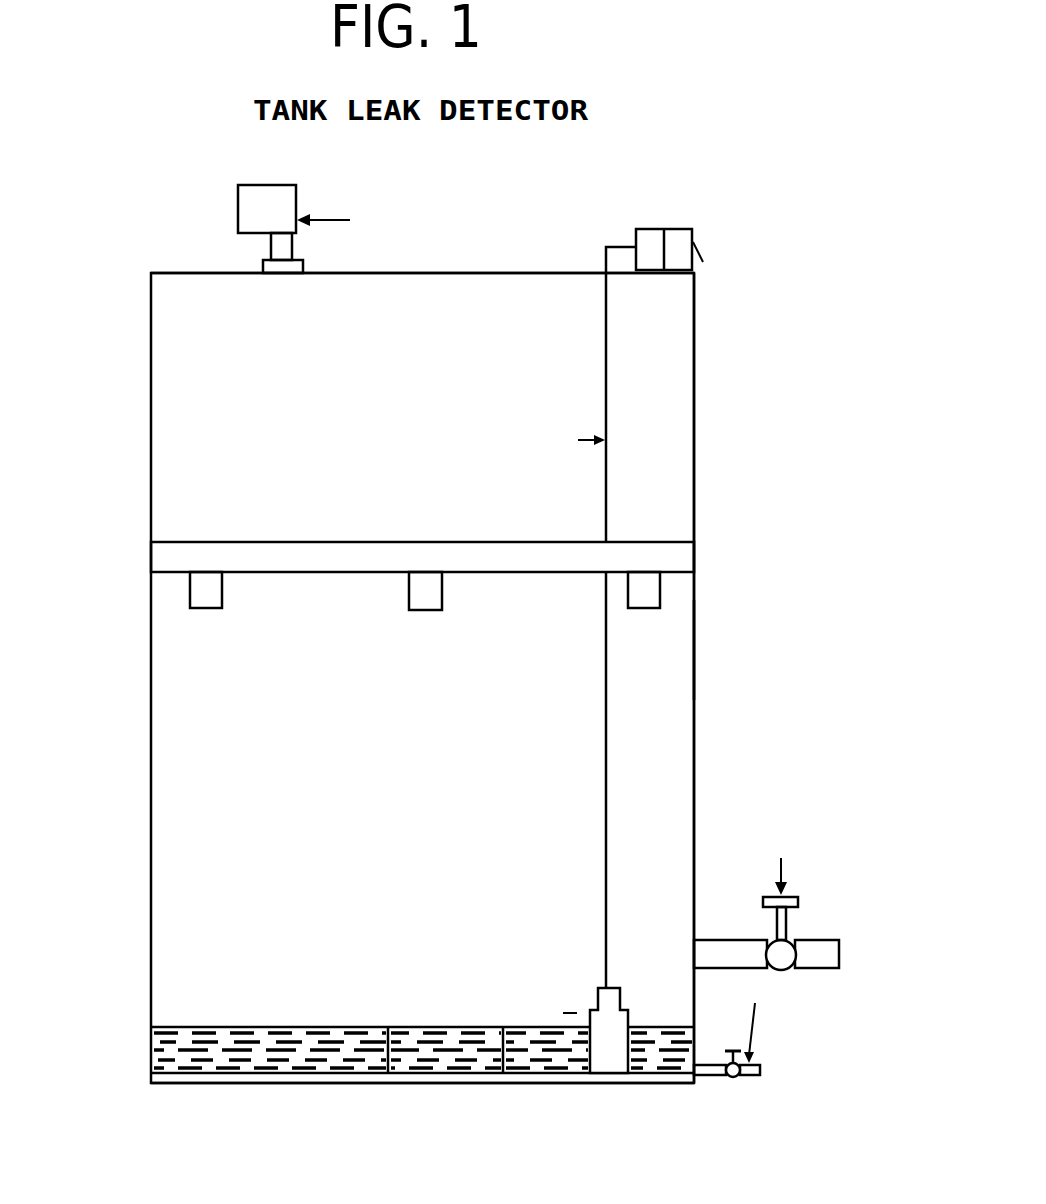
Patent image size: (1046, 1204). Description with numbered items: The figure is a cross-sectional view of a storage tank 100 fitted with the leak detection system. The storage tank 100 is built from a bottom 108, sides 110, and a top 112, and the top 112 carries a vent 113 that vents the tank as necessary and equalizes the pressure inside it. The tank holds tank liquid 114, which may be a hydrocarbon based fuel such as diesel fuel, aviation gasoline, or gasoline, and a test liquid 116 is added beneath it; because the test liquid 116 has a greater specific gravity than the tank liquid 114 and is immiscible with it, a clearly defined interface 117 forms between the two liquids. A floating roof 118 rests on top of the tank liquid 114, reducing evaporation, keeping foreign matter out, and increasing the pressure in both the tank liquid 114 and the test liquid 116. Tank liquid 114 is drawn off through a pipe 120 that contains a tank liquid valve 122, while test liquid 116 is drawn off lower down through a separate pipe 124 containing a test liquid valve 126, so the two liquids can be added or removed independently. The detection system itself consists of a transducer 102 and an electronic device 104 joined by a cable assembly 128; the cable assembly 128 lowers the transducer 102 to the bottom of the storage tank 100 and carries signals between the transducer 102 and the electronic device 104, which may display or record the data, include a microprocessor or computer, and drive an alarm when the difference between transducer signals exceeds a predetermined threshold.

The storage tank 100 is at (148, 368).
The transducer 102 is at (590, 1058).
The electronic device 104 is at (650, 229).
The bottom 108 is at (268, 1083).
The sides 110 is at (703, 455).
The top 112 is at (410, 272).
The vent 113 is at (238, 205).
The tank liquid 114 is at (678, 688).
The test liquid 116 is at (163, 1058).
The interface 117 is at (180, 1027).
The floating roof 118 is at (163, 552).
The pipe 120 is at (748, 924).
The tank liquid valve 122 is at (800, 915).
The pipe 124 is at (714, 1077).
The test liquid valve 126 is at (733, 1050).
The cable assembly 128 is at (618, 393).